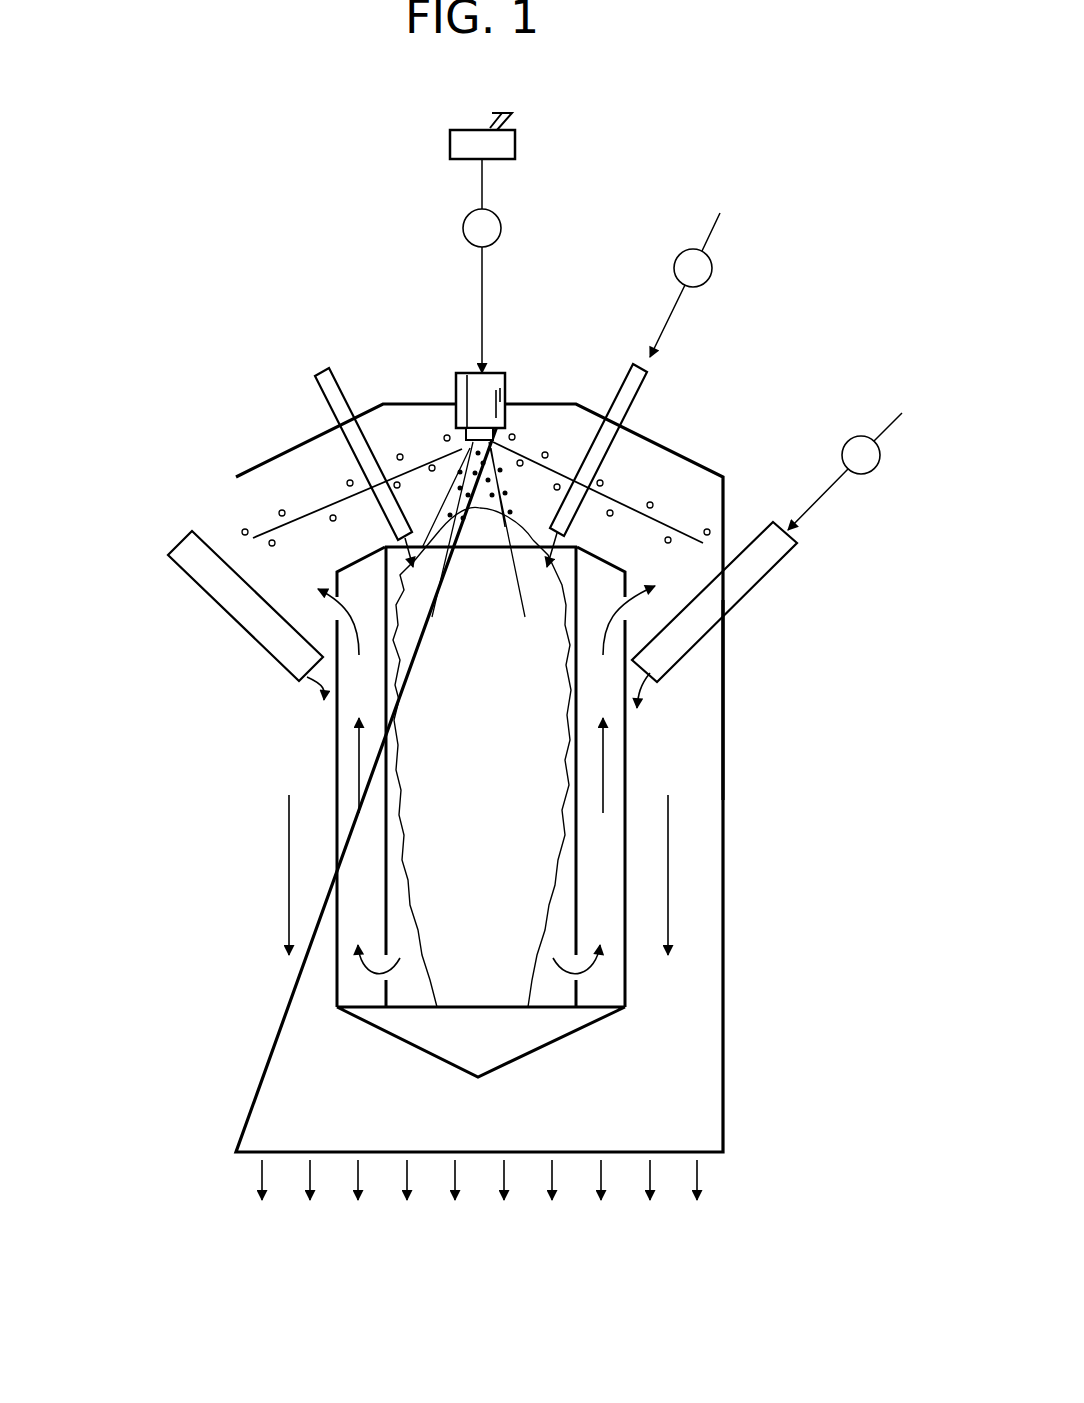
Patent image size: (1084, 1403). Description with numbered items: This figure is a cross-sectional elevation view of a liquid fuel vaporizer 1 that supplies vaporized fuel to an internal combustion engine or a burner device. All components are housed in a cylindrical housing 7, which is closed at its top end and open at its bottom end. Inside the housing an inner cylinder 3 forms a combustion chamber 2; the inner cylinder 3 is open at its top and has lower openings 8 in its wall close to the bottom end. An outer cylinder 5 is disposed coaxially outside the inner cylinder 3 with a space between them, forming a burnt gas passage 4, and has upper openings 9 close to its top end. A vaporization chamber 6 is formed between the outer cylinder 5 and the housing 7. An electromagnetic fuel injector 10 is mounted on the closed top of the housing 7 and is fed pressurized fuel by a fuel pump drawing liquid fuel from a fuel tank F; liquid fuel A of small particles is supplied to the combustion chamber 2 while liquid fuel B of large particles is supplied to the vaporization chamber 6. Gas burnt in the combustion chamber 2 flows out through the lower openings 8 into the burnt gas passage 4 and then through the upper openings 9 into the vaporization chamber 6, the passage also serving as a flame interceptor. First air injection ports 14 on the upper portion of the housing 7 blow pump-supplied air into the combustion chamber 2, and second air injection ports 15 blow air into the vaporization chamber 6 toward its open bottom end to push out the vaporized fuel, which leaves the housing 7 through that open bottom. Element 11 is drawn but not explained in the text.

The liquid fuel vaporizer 1 is at (197, 949).
The combustion chamber 2 is at (492, 754).
The inner cylinder 3 is at (386, 830).
The burnt gas passage 4 is at (608, 878).
The outer cylinder 5 is at (627, 754).
The vaporization chamber 6 is at (683, 575).
The cylindrical housing 7 is at (725, 689).
The lower openings 8 is at (383, 962).
The upper openings 9 is at (335, 600).
The electromagnetic fuel injector 10 is at (492, 375).
The nozzle inner tube 11 is at (462, 373).
The first air injection ports 14 is at (322, 372).
The second air injection ports 15 is at (188, 536).
The liquid fuel of small particles A is at (466, 452).
The liquid fuel of large particles B is at (514, 436).
The fuel tank F is at (516, 143).